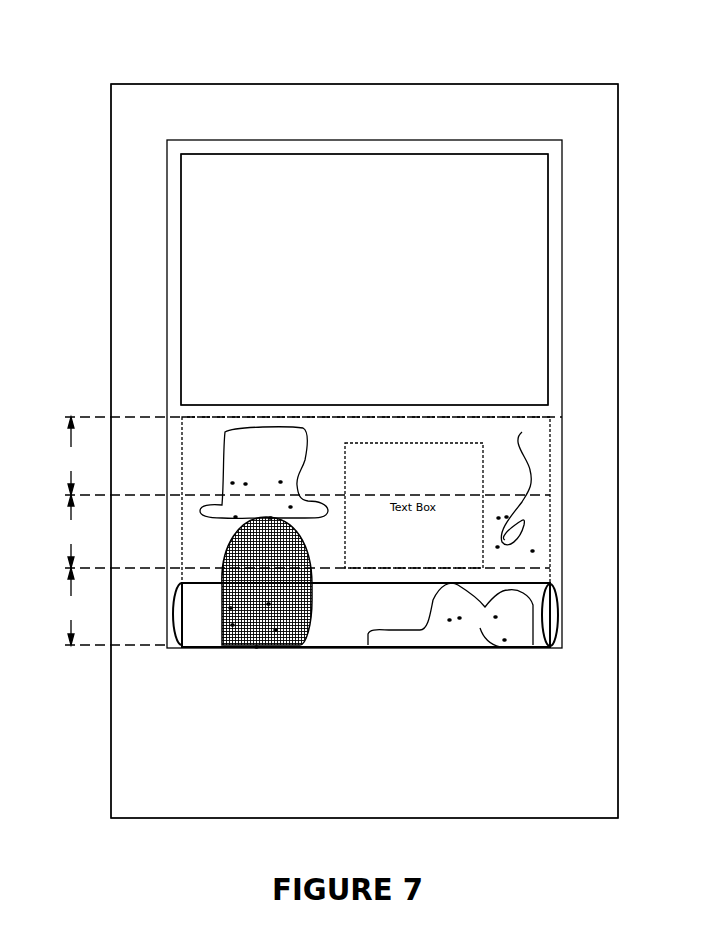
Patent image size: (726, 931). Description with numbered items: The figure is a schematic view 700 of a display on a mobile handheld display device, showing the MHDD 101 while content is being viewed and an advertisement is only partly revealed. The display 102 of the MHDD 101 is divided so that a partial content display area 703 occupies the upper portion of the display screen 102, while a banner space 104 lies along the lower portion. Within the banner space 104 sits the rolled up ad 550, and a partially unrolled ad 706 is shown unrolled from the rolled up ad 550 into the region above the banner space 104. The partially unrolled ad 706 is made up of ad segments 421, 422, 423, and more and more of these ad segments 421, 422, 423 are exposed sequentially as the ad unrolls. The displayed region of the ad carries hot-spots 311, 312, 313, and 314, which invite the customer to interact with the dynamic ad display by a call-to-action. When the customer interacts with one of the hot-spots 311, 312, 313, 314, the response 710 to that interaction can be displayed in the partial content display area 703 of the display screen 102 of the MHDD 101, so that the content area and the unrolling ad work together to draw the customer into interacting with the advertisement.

The schematic view 700 is at (548, 57).
The MHDD 101 is at (618, 445).
The display 102 is at (562, 355).
The partial content display area 703 is at (548, 265).
The response 710 is at (514, 186).
The partially unrolled ad 706 is at (207, 448).
The ad segment 421 is at (78, 456).
The ad segment 422 is at (78, 531).
The ad segment 423 is at (78, 606).
The hot-spot 312 is at (257, 507).
The hot-spot 311 is at (257, 632).
The hot-spot 314 is at (538, 522).
The hot-spot 313 is at (500, 645).
The banner space 104 is at (563, 600).
The rolled up ad 550 is at (205, 637).